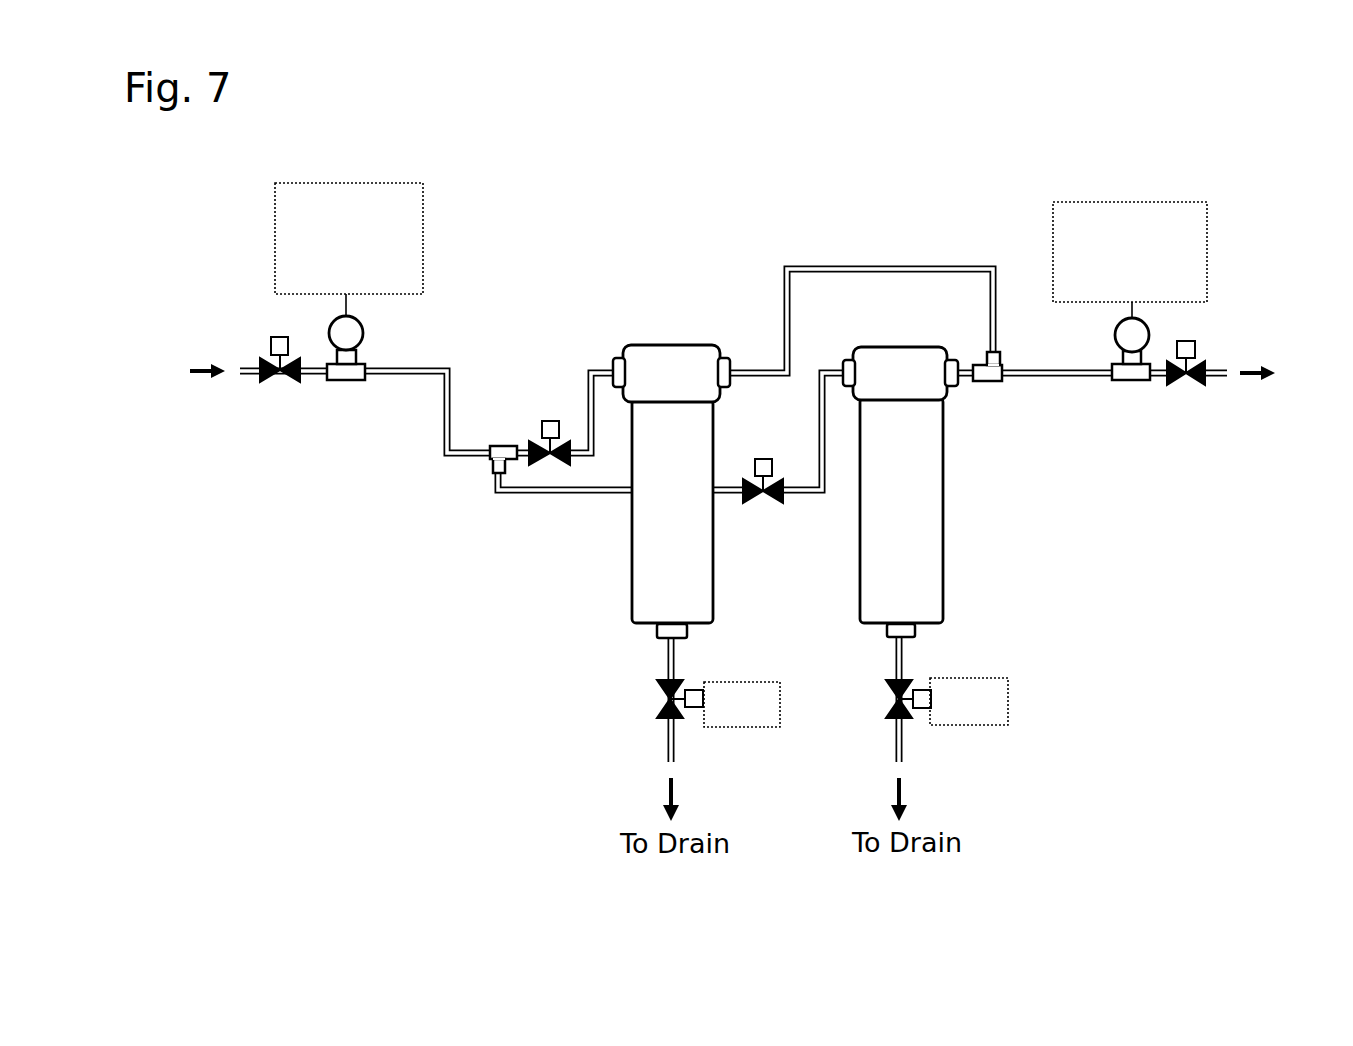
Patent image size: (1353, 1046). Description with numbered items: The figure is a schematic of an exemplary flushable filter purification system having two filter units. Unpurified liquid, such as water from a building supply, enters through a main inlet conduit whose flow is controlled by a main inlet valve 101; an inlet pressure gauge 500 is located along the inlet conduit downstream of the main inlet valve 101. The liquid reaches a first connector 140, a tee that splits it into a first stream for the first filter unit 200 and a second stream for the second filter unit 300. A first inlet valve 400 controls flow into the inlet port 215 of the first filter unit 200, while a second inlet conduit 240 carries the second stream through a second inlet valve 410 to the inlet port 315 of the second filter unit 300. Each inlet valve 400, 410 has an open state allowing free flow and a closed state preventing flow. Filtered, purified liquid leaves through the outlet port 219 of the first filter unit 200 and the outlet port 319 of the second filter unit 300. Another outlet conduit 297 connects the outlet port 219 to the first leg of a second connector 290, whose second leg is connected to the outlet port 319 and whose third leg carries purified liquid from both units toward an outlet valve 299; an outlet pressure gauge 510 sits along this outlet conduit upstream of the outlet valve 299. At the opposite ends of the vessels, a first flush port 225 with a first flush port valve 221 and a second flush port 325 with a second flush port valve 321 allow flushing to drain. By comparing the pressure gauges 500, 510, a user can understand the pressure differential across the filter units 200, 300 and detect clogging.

The main inlet valve 101 is at (270, 377).
The first connector 140 is at (488, 467).
The first filter unit 200 is at (608, 582).
The inlet port 215 is at (620, 357).
The outlet port 219 is at (723, 357).
The first flush port valve 221 is at (664, 693).
The first flush port 225 is at (688, 630).
The second inlet conduit 240 is at (593, 493).
The second connector 290 is at (988, 383).
The outlet conduit 297 is at (883, 267).
The outlet valve 299 is at (1177, 383).
The second filter unit 300 is at (973, 547).
The inlet port 315 is at (847, 359).
The outlet port 319 is at (955, 359).
The second flush port valve 321 is at (893, 692).
The second flush port 325 is at (886, 628).
The first inlet valve 400 is at (547, 420).
The second inlet valve 410 is at (755, 500).
The inlet pressure gauge 500 is at (350, 183).
The outlet pressure gauge 510 is at (1132, 202).